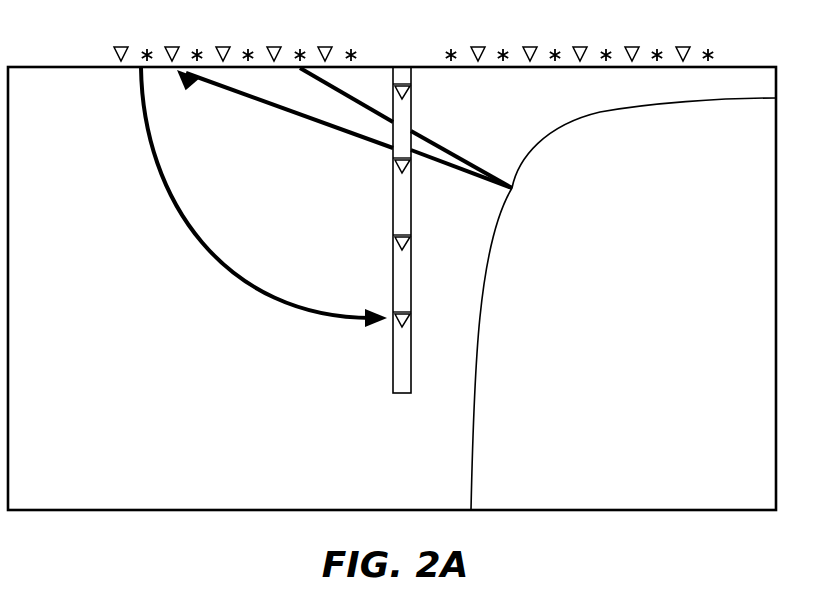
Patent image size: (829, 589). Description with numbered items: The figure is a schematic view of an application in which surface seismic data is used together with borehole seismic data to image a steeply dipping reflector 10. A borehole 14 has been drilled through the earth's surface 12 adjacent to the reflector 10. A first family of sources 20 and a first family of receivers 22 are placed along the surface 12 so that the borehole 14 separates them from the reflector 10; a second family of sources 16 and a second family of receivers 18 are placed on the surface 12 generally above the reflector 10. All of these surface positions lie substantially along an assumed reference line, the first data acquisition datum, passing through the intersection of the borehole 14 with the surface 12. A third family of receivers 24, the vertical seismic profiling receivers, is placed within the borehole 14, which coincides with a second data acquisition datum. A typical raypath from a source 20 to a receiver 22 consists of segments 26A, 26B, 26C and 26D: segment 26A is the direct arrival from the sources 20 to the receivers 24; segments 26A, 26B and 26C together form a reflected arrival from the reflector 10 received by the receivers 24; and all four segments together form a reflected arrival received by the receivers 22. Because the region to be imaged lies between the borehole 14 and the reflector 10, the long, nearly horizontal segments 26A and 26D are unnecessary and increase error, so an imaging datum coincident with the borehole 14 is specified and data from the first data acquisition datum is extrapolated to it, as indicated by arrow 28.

The steeply dipping reflector 10 is at (546, 142).
The earth's surface 12 is at (748, 67).
The borehole 14 is at (397, 395).
The second family of sources 16 is at (555, 49).
The second family of receivers 18 is at (580, 62).
The first family of sources 20 is at (248, 49).
The first family of receivers 22 is at (223, 47).
The third family of receivers 24 is at (411, 91).
The raypath segment 26A is at (342, 99).
The raypath segment 26B is at (448, 151).
The raypath segment 26C is at (484, 181).
The raypath segment 26D is at (305, 118).
The arrow 28 is at (258, 289).